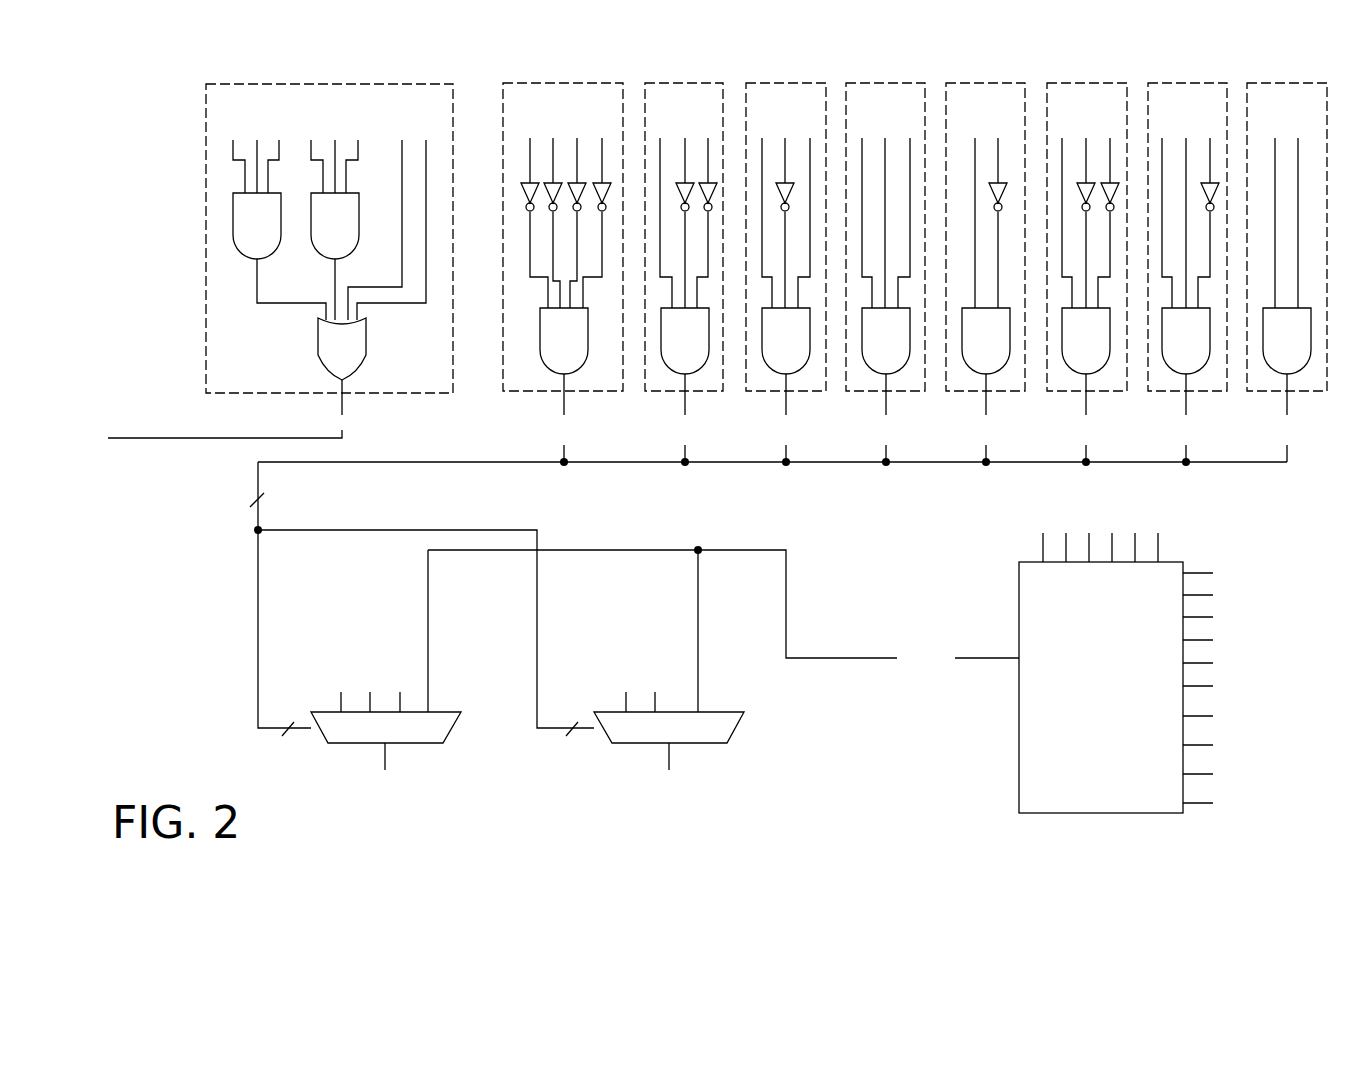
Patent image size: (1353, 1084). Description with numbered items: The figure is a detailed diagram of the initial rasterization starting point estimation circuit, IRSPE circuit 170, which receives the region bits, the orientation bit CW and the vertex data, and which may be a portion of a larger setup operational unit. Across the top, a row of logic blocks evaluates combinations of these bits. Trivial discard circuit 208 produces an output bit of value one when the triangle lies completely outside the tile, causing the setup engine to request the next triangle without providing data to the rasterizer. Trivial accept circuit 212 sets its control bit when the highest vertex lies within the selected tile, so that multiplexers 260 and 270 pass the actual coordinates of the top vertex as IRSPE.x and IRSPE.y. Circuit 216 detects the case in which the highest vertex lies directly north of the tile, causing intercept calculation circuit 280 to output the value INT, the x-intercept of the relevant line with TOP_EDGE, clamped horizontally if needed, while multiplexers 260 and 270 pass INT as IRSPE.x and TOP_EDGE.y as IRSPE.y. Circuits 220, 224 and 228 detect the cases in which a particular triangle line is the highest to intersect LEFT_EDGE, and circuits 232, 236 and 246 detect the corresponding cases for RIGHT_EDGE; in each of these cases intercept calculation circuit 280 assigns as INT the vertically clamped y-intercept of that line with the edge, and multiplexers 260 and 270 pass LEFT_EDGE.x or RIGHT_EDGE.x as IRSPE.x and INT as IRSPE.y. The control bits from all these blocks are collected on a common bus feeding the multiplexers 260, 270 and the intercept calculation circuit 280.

The IRSPE circuit 170 is at (174, 598).
The trivial discard circuit 208 is at (331, 84).
The trivial accept circuit 212 is at (564, 83).
The circuit 216 is at (685, 83).
The circuit 220 is at (786, 83).
The circuit 224 is at (886, 83).
The circuit 228 is at (986, 83).
The circuit 232 is at (1087, 83).
The circuit 236 is at (1187, 83).
The circuit 246 is at (1287, 83).
The multiplexer 260 is at (372, 739).
The multiplexer 270 is at (655, 739).
The intercept calculation circuit 280 is at (1088, 671).